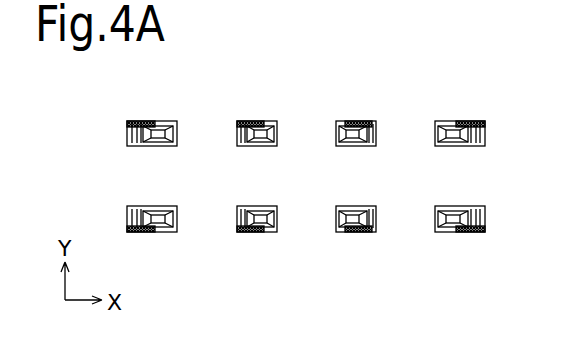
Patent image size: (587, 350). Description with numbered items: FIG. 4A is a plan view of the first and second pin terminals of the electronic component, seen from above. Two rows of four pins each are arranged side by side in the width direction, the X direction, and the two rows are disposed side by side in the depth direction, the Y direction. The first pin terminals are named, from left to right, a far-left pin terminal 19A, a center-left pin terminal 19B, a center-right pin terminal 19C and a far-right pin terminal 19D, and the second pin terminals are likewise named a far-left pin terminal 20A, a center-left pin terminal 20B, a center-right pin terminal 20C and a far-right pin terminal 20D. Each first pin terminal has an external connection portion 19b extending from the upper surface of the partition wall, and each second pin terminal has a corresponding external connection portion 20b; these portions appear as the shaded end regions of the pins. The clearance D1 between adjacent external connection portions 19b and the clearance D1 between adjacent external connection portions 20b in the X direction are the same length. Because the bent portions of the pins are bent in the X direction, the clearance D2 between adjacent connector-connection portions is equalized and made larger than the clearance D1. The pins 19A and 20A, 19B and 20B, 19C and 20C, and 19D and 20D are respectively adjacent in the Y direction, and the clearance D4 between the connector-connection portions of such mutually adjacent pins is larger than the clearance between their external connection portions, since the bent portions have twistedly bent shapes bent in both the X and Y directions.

The far-left pin terminal 20A is at (144, 121).
The center-left pin terminal 20B is at (252, 121).
The center-right pin terminal 20C is at (363, 121).
The far-right pin terminal 20D is at (472, 121).
The far-left pin terminal 19A is at (140, 234).
The center-left pin terminal 19B is at (250, 233).
The center-right pin terminal 19C is at (356, 233).
The far-right pin terminal 19D is at (469, 233).
The external connection portion 20b is at (213, 145).
The external connection portion 19b is at (177, 224).
The clearance D1 is at (421, 138).
The clearance D2 is at (375, 229).
The clearance D4 is at (456, 148).